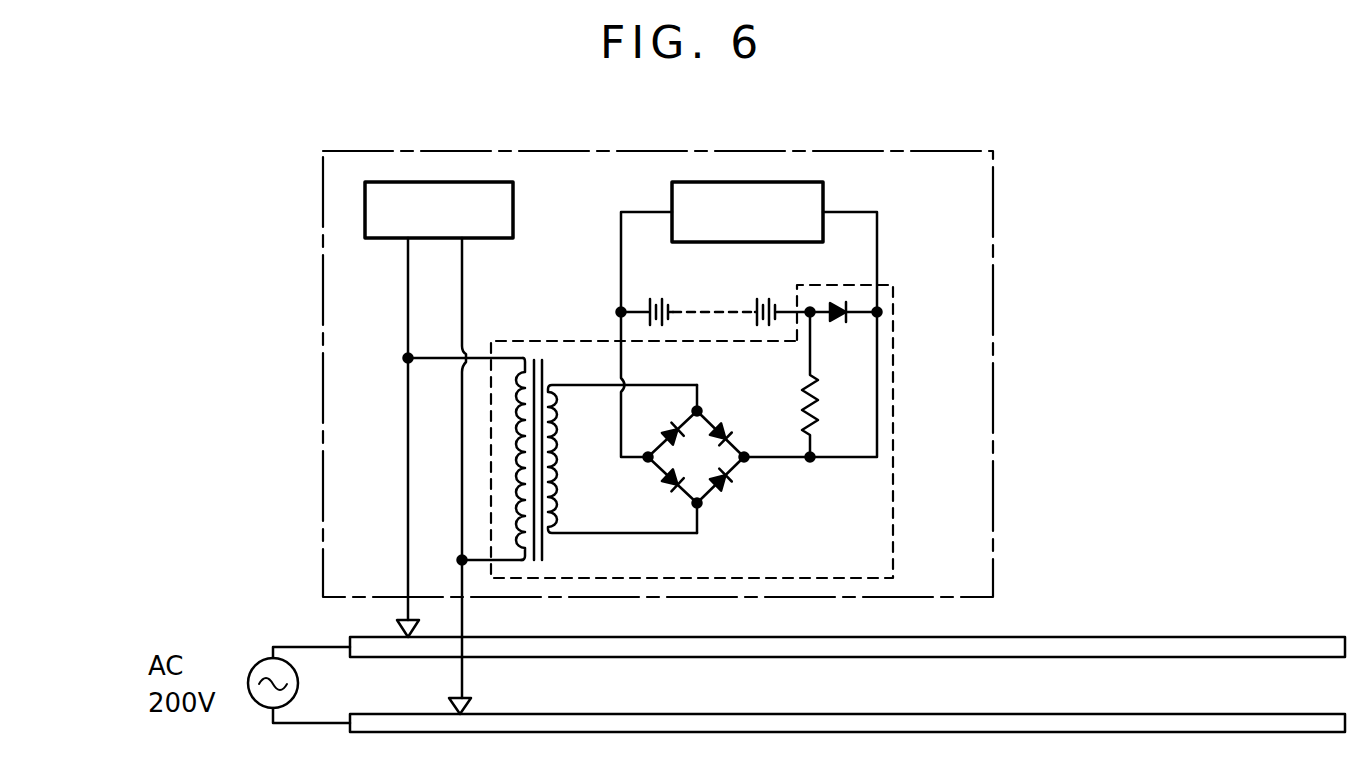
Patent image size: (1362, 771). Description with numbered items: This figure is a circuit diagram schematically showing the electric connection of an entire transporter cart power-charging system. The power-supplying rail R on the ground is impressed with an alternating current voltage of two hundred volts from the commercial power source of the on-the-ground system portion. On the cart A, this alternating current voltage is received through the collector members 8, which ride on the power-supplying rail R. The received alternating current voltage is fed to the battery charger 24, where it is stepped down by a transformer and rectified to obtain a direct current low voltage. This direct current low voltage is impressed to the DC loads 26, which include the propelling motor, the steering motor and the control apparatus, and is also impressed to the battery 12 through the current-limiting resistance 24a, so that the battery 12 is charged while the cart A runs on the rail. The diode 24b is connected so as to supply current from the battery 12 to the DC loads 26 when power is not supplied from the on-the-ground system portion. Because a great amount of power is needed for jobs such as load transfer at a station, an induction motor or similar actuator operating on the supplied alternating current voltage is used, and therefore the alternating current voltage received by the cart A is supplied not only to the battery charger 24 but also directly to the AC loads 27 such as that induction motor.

The cart A is at (993, 390).
The collector members 8 is at (398, 627).
The battery 12 is at (672, 303).
The battery charger 24 is at (895, 430).
The current-limiting resistance 24a is at (810, 378).
The diode 24b is at (838, 302).
The DC loads 26 is at (778, 182).
The AC loads 27 is at (428, 182).
The power-supplying rail R is at (1275, 637).